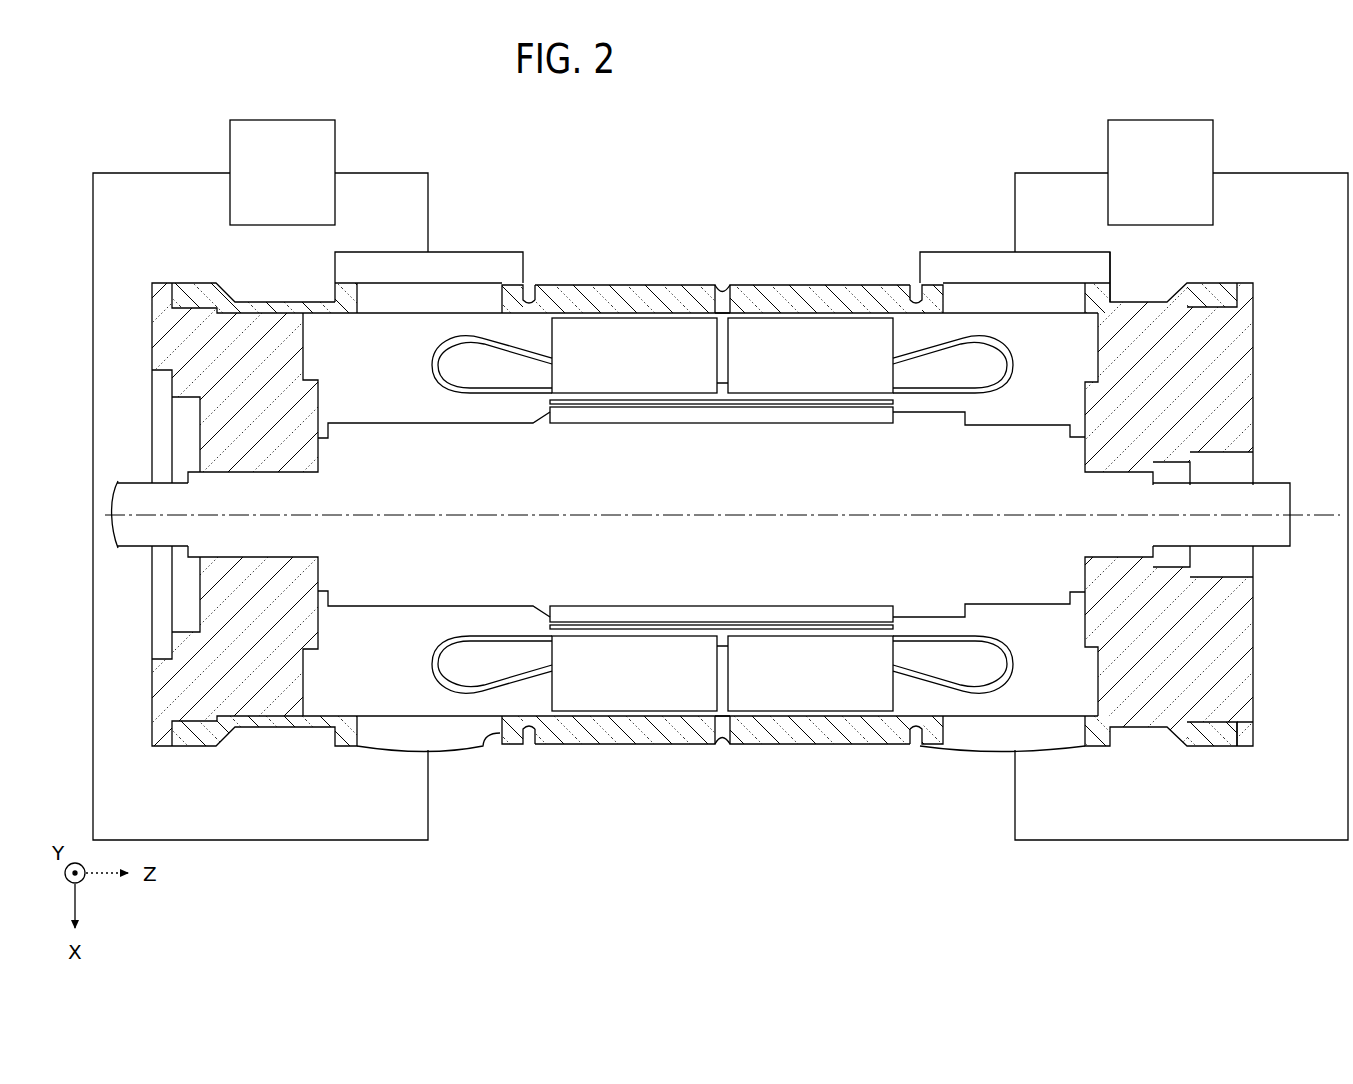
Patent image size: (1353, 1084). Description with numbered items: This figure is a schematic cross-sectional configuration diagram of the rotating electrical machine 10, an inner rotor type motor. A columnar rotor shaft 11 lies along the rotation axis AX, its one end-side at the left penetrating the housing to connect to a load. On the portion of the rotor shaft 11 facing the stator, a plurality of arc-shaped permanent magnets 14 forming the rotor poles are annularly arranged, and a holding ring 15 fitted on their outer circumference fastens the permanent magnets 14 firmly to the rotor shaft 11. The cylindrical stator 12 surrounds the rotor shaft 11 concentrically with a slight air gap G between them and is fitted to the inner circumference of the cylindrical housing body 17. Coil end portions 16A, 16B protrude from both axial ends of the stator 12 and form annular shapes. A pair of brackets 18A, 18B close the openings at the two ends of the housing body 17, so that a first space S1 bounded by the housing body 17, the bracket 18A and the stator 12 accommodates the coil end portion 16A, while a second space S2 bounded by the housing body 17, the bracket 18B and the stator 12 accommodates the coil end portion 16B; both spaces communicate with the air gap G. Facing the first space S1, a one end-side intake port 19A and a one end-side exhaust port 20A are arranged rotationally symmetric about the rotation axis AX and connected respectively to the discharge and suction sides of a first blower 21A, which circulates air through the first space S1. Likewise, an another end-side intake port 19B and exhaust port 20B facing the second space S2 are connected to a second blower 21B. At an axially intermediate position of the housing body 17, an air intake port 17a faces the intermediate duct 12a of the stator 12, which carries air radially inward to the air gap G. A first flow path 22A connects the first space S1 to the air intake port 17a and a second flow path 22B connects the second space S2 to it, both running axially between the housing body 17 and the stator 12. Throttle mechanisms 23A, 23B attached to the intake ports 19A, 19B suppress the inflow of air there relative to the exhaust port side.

The rotating electrical machine 10 is at (783, 172).
The rotor shaft 11 is at (1276, 483).
The stator 12 is at (592, 314).
The intermediate duct 12a is at (716, 356).
The permanent magnet 14 is at (895, 612).
The holding ring 15 is at (895, 627).
The coil end portion 16A is at (438, 672).
The coil end portion 16B is at (1010, 692).
The housing body 17 is at (1215, 292).
The air intake port 17a is at (722, 300).
The bracket 18A is at (155, 322).
The bracket 18B is at (1250, 352).
The one end-side intake port 19A is at (492, 298).
The another end-side intake port 19B is at (962, 298).
The one end-side exhaust port 20A is at (489, 748).
The another end-side exhaust port 20B is at (953, 746).
The first blower 21A is at (288, 120).
The second blower 21B is at (1162, 120).
The first flow path 22A is at (625, 313).
The second flow path 22B is at (808, 313).
The throttle mechanism 23A is at (445, 250).
The throttle mechanism 23B is at (990, 250).
The air gap G is at (850, 400).
The first space S1 is at (338, 355).
The second space S2 is at (1088, 346).
The rotation axis AX is at (1312, 522).